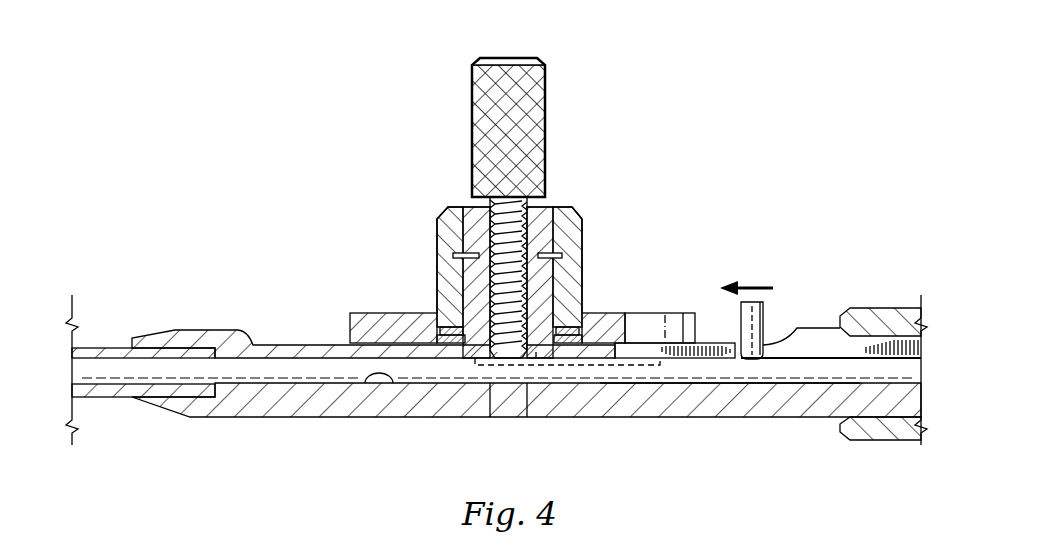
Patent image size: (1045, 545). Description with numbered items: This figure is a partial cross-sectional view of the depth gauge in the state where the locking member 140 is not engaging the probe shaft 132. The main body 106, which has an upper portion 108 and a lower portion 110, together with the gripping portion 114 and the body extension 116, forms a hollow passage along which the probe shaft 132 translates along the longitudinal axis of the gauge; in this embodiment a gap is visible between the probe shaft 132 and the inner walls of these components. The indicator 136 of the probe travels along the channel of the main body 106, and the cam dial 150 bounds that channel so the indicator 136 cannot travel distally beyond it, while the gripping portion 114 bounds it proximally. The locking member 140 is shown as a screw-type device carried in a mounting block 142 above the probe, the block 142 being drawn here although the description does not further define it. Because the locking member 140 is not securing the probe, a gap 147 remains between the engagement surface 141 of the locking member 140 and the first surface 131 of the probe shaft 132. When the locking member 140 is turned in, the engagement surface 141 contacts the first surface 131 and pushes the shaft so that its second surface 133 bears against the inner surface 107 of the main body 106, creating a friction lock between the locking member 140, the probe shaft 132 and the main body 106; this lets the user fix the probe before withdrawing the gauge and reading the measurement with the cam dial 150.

The main body 106 is at (300, 421).
The inner surface 107 is at (368, 385).
The upper portion 108 is at (823, 328).
The lower portion 110 is at (148, 338).
The gripping portion 114 is at (882, 308).
The body extension 116 is at (102, 399).
The first surface 131 is at (588, 365).
The probe shaft 132 is at (728, 374).
The second surface 133 is at (658, 368).
The indicator 136 is at (765, 313).
The locking member 140 is at (472, 112).
The engagement surface 141 is at (501, 352).
The mounting block 142 is at (532, 231).
The gap 147 is at (537, 352).
The cam dial 150 is at (378, 313).